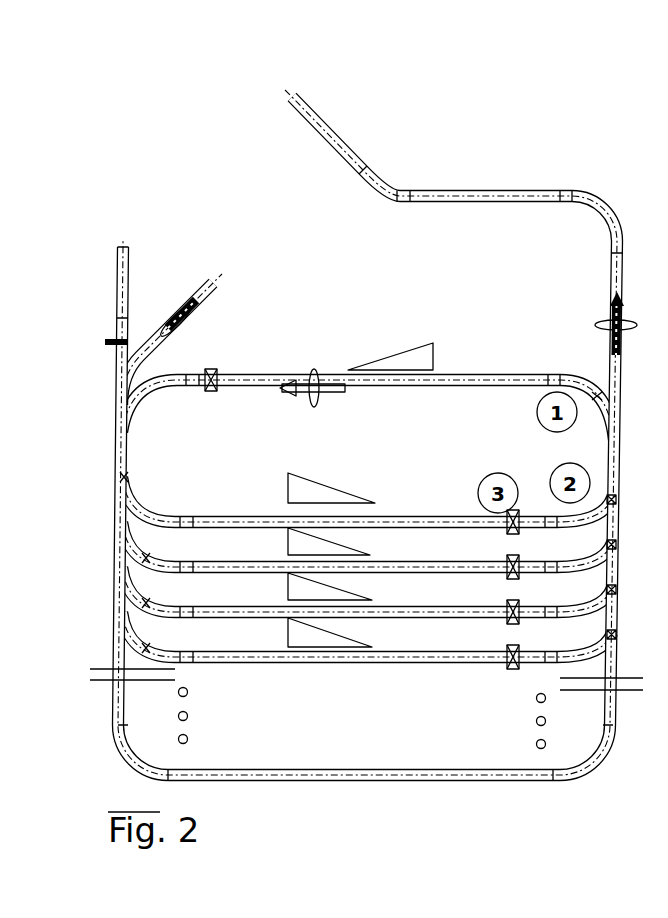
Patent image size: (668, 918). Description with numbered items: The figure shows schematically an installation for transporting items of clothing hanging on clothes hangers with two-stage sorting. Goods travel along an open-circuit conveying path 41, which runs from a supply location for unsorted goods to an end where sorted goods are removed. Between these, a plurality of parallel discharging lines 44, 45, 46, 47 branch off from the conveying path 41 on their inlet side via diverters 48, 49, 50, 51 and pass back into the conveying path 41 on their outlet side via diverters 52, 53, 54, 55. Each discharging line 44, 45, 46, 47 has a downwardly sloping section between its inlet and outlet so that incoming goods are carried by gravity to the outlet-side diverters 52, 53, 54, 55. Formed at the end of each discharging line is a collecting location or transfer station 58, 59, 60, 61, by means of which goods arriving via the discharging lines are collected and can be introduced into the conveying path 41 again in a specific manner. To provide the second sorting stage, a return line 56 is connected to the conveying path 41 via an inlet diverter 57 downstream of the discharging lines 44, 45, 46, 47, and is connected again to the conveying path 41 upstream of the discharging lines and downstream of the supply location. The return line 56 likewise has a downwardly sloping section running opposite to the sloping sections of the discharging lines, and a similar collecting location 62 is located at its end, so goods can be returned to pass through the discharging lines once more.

The conveying path 41 is at (388, 782).
The discharging line 44 is at (392, 518).
The discharging line 45 is at (403, 565).
The discharging line 46 is at (390, 613).
The discharging line 47 is at (397, 663).
The diverter 48 is at (125, 476).
The diverter 49 is at (150, 561).
The diverter 50 is at (150, 604).
The diverter 51 is at (152, 650).
The diverter 52 is at (614, 504).
The diverter 53 is at (614, 547).
The diverter 54 is at (614, 592).
The diverter 55 is at (614, 637).
The return line 56 is at (458, 383).
The inlet diverter 57 is at (600, 396).
The transfer station 58 is at (507, 532).
The transfer station 59 is at (507, 578).
The transfer station 60 is at (507, 623).
The transfer station 61 is at (505, 672).
The collecting location 62 is at (217, 370).